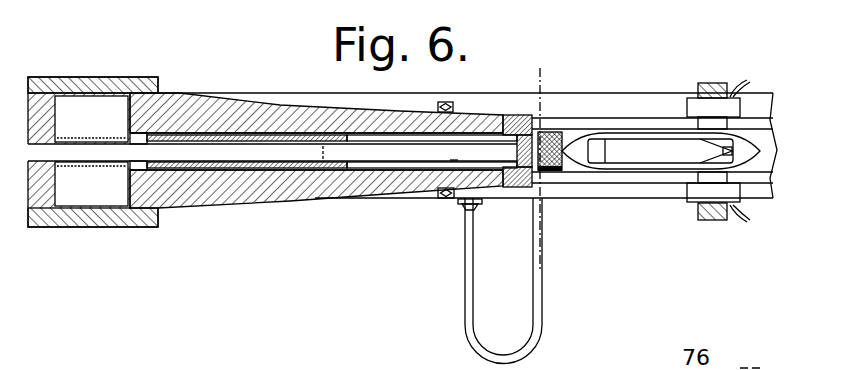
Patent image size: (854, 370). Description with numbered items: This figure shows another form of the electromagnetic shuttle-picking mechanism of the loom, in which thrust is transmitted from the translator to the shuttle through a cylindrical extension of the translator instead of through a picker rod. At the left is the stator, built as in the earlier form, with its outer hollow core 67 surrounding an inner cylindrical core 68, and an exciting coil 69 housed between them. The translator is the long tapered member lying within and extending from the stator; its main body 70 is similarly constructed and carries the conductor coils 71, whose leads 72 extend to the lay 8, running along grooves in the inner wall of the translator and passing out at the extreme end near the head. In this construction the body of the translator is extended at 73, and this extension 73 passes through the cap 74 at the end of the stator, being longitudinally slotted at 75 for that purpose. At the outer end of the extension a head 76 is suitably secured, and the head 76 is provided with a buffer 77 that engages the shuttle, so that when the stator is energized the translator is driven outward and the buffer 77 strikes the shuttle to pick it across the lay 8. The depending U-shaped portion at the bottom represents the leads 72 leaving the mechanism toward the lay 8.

The outer hollow core 67 is at (170, 100).
The inner cylindrical core 68 is at (140, 157).
The exciting coil 69 is at (80, 195).
The main body 70 is at (203, 168).
The conductor coils 71 is at (257, 168).
The leads 72 is at (467, 233).
The extension of the translator body 73 is at (358, 128).
The cap 74 is at (522, 115).
The longitudinal slot 75 is at (390, 138).
The head 76 is at (547, 172).
The buffer 77 is at (552, 140).
The lay 8 is at (560, 258).